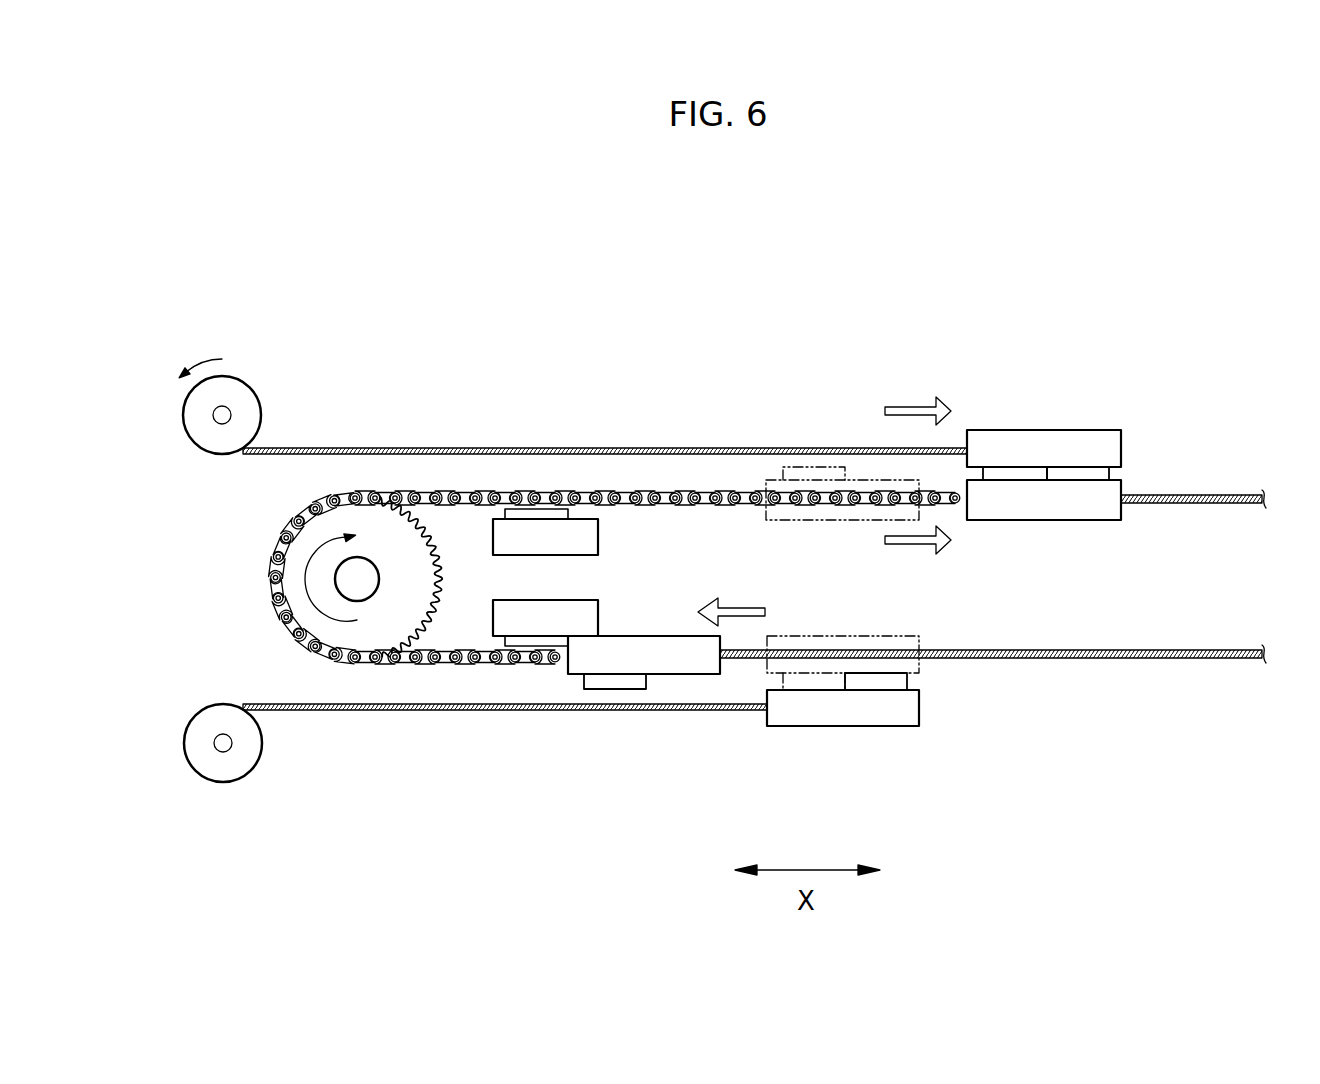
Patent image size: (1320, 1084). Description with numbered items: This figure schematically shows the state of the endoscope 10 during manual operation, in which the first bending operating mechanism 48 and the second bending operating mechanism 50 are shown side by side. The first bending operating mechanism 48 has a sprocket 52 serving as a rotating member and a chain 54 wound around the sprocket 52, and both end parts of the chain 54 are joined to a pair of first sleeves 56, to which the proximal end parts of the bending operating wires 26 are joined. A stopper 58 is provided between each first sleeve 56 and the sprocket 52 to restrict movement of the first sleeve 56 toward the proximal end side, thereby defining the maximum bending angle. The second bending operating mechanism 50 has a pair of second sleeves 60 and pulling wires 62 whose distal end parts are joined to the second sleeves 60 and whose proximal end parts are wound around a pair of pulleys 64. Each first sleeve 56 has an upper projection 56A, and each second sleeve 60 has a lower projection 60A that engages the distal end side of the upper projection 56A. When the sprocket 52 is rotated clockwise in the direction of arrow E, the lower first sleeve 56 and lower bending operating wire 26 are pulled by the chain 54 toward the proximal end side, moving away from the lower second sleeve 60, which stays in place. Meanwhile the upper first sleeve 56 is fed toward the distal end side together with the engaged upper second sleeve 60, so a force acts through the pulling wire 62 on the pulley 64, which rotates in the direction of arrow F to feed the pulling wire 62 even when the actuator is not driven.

The apparatus 10 is at (1103, 275).
The bending operating wires 26 is at (1248, 492).
The first bending operating mechanism 48 is at (215, 607).
The second bending operating mechanism 50 is at (807, 362).
The sprocket 52 is at (446, 583).
The chain 54 is at (598, 481).
The first sleeve 56 is at (1095, 522).
The upper projection 56A is at (1005, 481).
The stopper 58 is at (592, 543).
The second sleeve 60 is at (1098, 429).
The lower projection 60A is at (1098, 475).
The pulling wire 62 is at (433, 446).
The pulley 64 is at (252, 399).